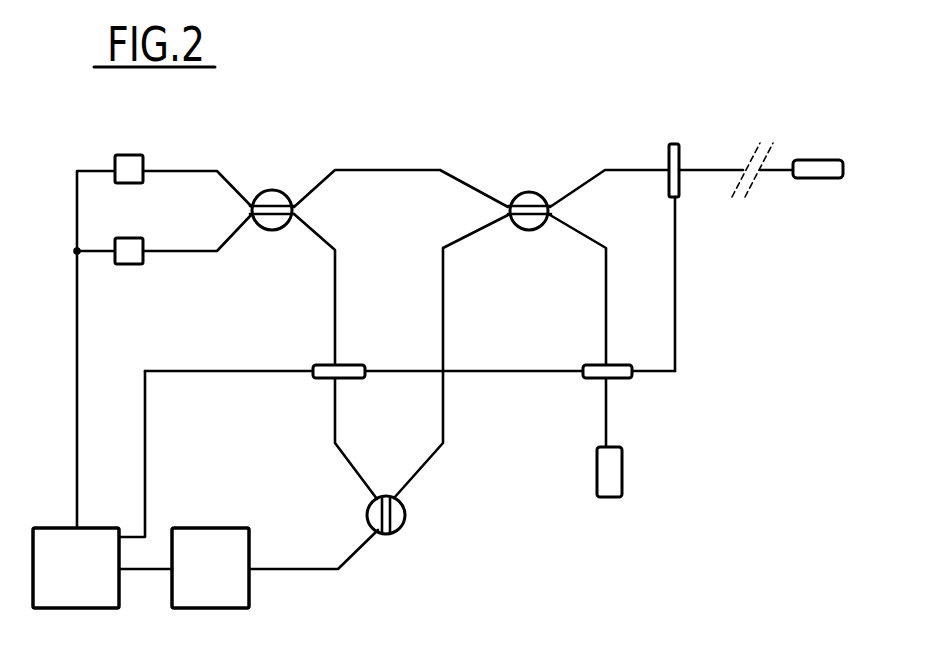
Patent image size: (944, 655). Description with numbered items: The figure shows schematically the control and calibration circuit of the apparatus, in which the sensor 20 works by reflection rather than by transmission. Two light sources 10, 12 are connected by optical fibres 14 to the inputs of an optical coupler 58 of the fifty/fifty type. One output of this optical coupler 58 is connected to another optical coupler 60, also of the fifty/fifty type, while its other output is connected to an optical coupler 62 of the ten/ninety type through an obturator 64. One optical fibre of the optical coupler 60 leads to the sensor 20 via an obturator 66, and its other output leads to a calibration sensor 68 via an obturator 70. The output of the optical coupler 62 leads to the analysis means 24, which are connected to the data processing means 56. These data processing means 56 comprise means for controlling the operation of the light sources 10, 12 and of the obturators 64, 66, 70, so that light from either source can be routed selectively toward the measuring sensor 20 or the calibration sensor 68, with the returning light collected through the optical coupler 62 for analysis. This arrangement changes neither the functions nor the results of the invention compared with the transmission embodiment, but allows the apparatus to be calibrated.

The light source 10 is at (142, 128).
The light source 12 is at (130, 238).
The optical fibres 14 is at (200, 171).
The sensor 20 is at (818, 164).
The analysis means 24 is at (232, 585).
The data processing means 56 is at (92, 585).
The optical coupler 58 is at (273, 198).
The optical coupler 60 is at (530, 198).
The optical coupler 62 is at (395, 518).
The obturator 64 is at (355, 365).
The obturator 66 is at (705, 120).
The calibration sensor 68 is at (609, 472).
The obturator 70 is at (612, 370).